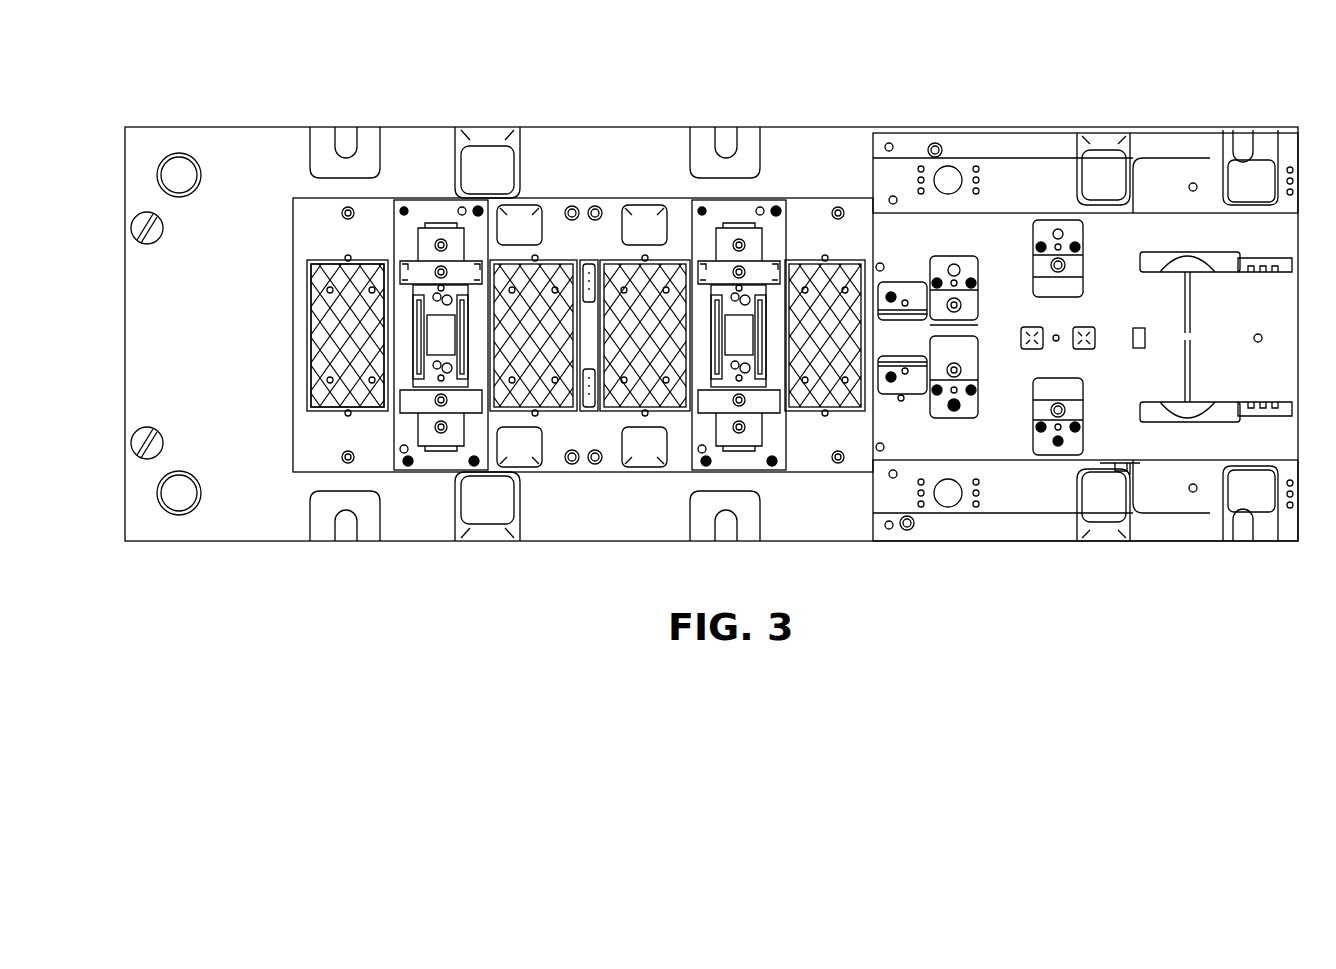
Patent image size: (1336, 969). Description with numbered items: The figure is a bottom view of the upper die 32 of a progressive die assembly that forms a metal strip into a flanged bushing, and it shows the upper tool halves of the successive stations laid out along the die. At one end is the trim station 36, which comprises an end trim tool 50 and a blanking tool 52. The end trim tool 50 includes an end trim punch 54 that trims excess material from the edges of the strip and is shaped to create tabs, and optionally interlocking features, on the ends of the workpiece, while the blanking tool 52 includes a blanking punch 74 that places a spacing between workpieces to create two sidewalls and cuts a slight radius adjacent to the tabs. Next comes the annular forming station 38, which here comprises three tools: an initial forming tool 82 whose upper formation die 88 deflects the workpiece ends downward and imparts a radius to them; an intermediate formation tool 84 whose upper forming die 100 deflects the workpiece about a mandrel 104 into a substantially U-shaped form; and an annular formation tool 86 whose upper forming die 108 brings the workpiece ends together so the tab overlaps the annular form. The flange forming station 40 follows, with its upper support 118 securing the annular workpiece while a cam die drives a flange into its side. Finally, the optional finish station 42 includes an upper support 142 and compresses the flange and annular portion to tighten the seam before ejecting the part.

The upper die 32 is at (1165, 44).
The trim station 36 is at (1244, 114).
The annular forming station 38 is at (993, 134).
The flange forming station 40 is at (729, 118).
The finish station 42 is at (347, 118).
The end trim tool 50 is at (1279, 250).
The blanking tool 52 is at (1181, 266).
The end trim punch 54 is at (1280, 416).
The blanking punch 74 is at (1184, 312).
The initial forming tool 82 is at (1053, 214).
The intermediate formation tool 84 is at (953, 252).
The annular formation tool 86 is at (898, 276).
The upper formation die 88 is at (1060, 384).
The upper forming die 100 is at (960, 385).
The mandrel 104 is at (952, 330).
The upper forming die 108 is at (897, 345).
The upper support 118 is at (730, 342).
The upper support 142 is at (440, 335).